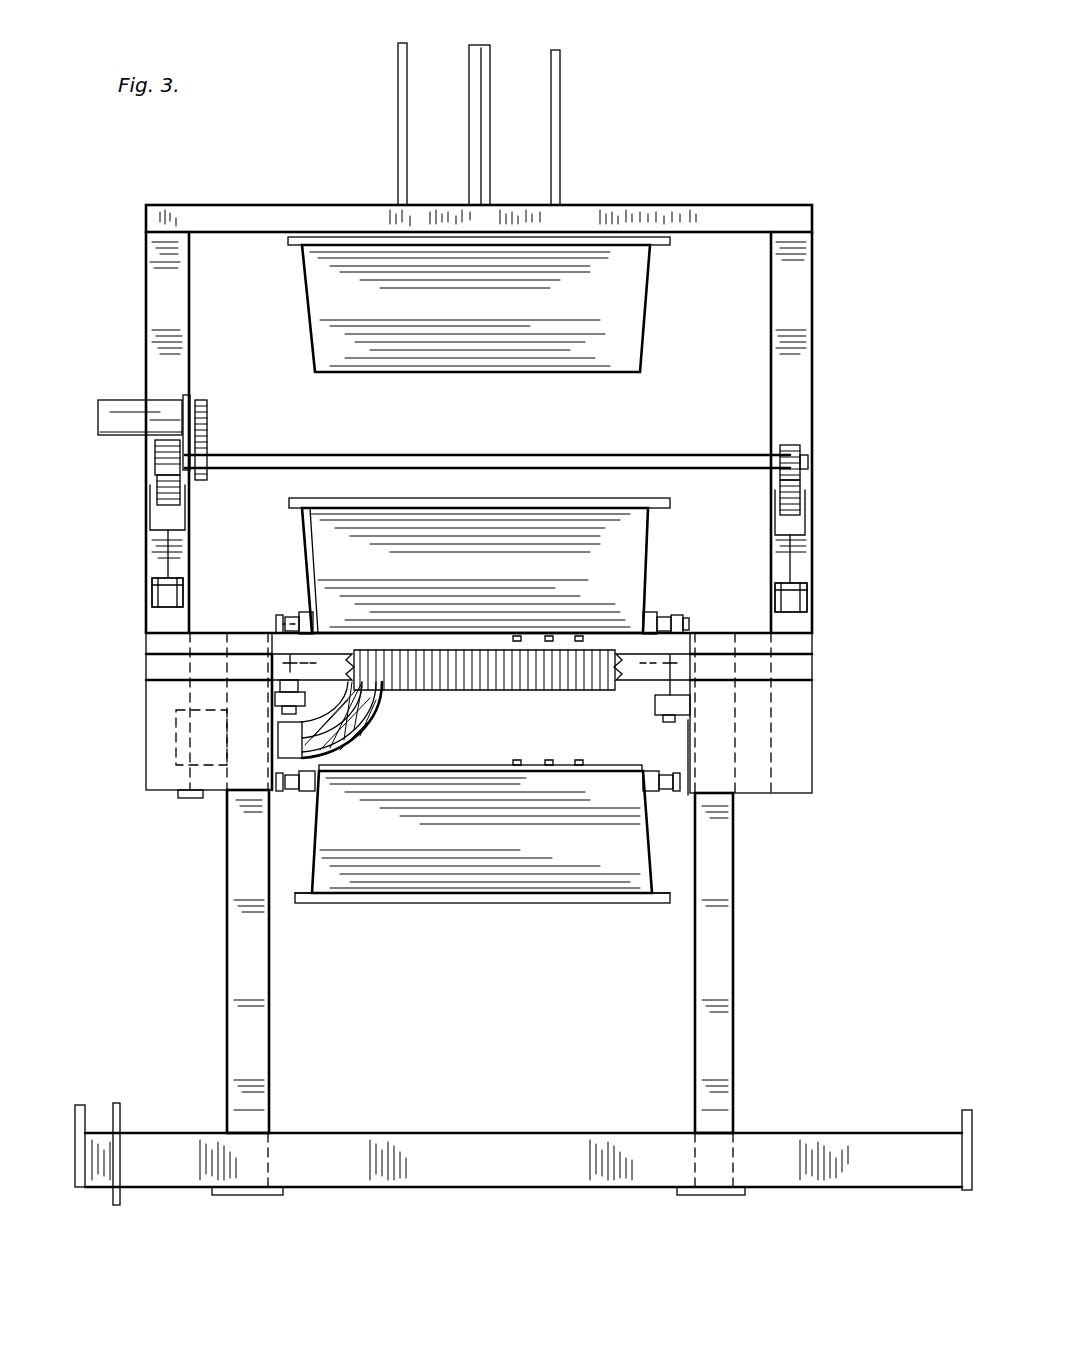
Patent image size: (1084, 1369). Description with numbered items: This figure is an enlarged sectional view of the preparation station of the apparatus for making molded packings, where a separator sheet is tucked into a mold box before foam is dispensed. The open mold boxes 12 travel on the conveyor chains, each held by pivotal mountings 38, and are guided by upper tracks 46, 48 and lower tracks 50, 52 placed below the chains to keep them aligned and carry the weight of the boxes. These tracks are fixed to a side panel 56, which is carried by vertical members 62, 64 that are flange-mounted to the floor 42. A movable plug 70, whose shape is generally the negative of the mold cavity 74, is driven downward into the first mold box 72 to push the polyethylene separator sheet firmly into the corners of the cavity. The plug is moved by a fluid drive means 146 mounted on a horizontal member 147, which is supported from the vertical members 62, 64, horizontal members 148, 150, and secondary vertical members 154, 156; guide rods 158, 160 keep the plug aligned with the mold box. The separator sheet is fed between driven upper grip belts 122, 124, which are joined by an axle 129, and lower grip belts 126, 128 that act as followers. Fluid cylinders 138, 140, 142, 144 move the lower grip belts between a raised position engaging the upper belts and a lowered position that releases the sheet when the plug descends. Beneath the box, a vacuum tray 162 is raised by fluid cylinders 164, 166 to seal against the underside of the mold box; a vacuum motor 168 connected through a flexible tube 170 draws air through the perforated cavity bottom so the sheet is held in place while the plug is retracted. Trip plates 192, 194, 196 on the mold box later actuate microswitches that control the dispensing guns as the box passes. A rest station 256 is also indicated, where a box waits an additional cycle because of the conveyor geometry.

The mold boxes 12 is at (415, 905).
The pivotal mountings 38 is at (284, 612).
The floor 42 is at (482, 1188).
The upper track 46 is at (316, 652).
The upper track 48 is at (640, 622).
The lower track 50 is at (295, 793).
The lower track 52 is at (680, 796).
The side panel 56 is at (690, 732).
The vertical member 62 is at (227, 1024).
The vertical member 64 is at (695, 1000).
The movable plug 70 is at (646, 332).
The first mold box 72 is at (479, 569).
The mold cavity 74 is at (355, 556).
The upper grip belt 122 is at (160, 440).
The upper grip belt 124 is at (805, 446).
The lower grip belt 126 is at (162, 512).
The lower grip belt 128 is at (800, 510).
The axle 129 is at (650, 455).
The fluid cylinder 138 is at (155, 590).
The fluid cylinder 140 is at (167, 592).
The fluid cylinder 142 is at (810, 600).
The fluid cylinder 144 is at (791, 597).
The fluid drive means 146 is at (490, 68).
The horizontal member 147 is at (738, 205).
The horizontal member 148 is at (230, 795).
The horizontal member 150 is at (742, 800).
The secondary vertical member 154 is at (189, 352).
The secondary vertical member 156 is at (812, 318).
The guide rod 158 is at (398, 68).
The guide rod 160 is at (560, 82).
The vacuum tray 162 is at (505, 690).
The fluid cylinder 164 is at (286, 712).
The fluid cylinder 166 is at (662, 716).
The vacuum motor 168 is at (176, 738).
The flexible tube 170 is at (376, 710).
The trip plate 192 is at (514, 760).
The trip plate 194 is at (548, 760).
The trip plate 196 is at (580, 760).
The rest station 256 is at (482, 834).